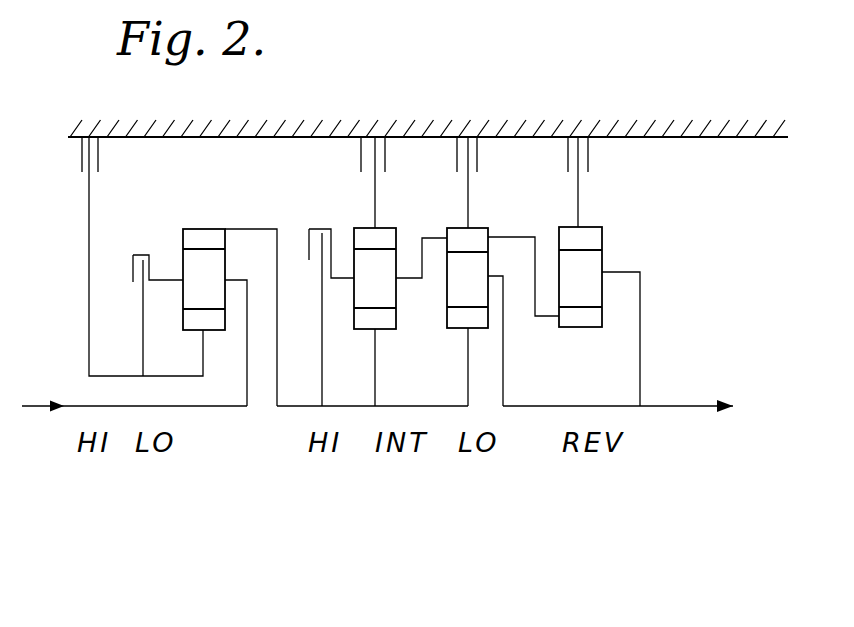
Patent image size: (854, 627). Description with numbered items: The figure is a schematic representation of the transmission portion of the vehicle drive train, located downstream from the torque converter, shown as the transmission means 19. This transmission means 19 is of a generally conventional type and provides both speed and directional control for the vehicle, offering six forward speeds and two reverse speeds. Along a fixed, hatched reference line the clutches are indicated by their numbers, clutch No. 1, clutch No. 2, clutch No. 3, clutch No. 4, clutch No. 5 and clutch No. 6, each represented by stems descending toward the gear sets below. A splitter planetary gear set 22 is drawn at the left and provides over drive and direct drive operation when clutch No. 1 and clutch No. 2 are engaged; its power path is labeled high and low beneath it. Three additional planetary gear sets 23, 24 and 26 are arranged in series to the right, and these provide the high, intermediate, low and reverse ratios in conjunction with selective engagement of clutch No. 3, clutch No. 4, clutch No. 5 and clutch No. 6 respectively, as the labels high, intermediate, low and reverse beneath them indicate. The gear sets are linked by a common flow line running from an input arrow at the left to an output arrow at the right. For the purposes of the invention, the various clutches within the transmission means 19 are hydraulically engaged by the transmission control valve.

The transmission means 19 is at (540, 63).
The clutch No. 1 is at (90, 132).
The clutch No. 2 is at (148, 107).
The clutch No. 3 is at (323, 107).
The clutch No. 4 is at (373, 132).
The clutch No. 5 is at (467, 132).
The clutch No. 6 is at (578, 132).
The splitter planetary gear set 22 is at (235, 217).
The planetary gear set 23 is at (395, 219).
The planetary gear set 24 is at (488, 220).
The planetary gear set 26 is at (597, 219).